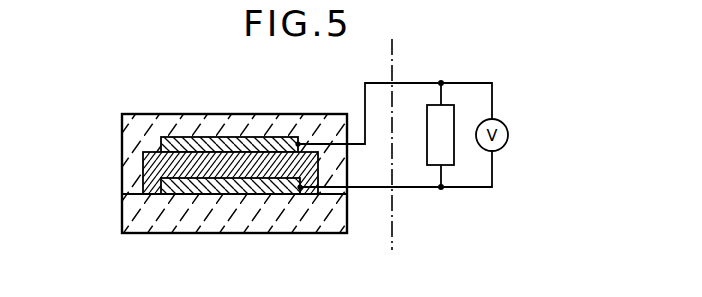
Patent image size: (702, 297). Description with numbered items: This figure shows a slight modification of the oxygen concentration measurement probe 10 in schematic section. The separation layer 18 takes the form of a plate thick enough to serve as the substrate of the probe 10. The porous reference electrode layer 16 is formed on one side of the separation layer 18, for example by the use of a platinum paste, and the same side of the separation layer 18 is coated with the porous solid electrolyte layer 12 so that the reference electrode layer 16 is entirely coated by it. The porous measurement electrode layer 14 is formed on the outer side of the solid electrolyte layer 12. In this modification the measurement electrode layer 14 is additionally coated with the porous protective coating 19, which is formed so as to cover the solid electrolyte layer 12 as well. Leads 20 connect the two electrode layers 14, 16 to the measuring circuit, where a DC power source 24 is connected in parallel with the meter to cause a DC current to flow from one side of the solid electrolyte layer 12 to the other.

The probe 10 is at (320, 113).
The solid electrolyte layer 12 is at (152, 173).
The measurement electrode layer 14 is at (246, 137).
The reference electrode layer 16 is at (254, 192).
The separation layer 18 is at (140, 220).
The porous protective coating 19 is at (181, 123).
The leads 20 is at (423, 82).
The DC power source 24 is at (427, 127).